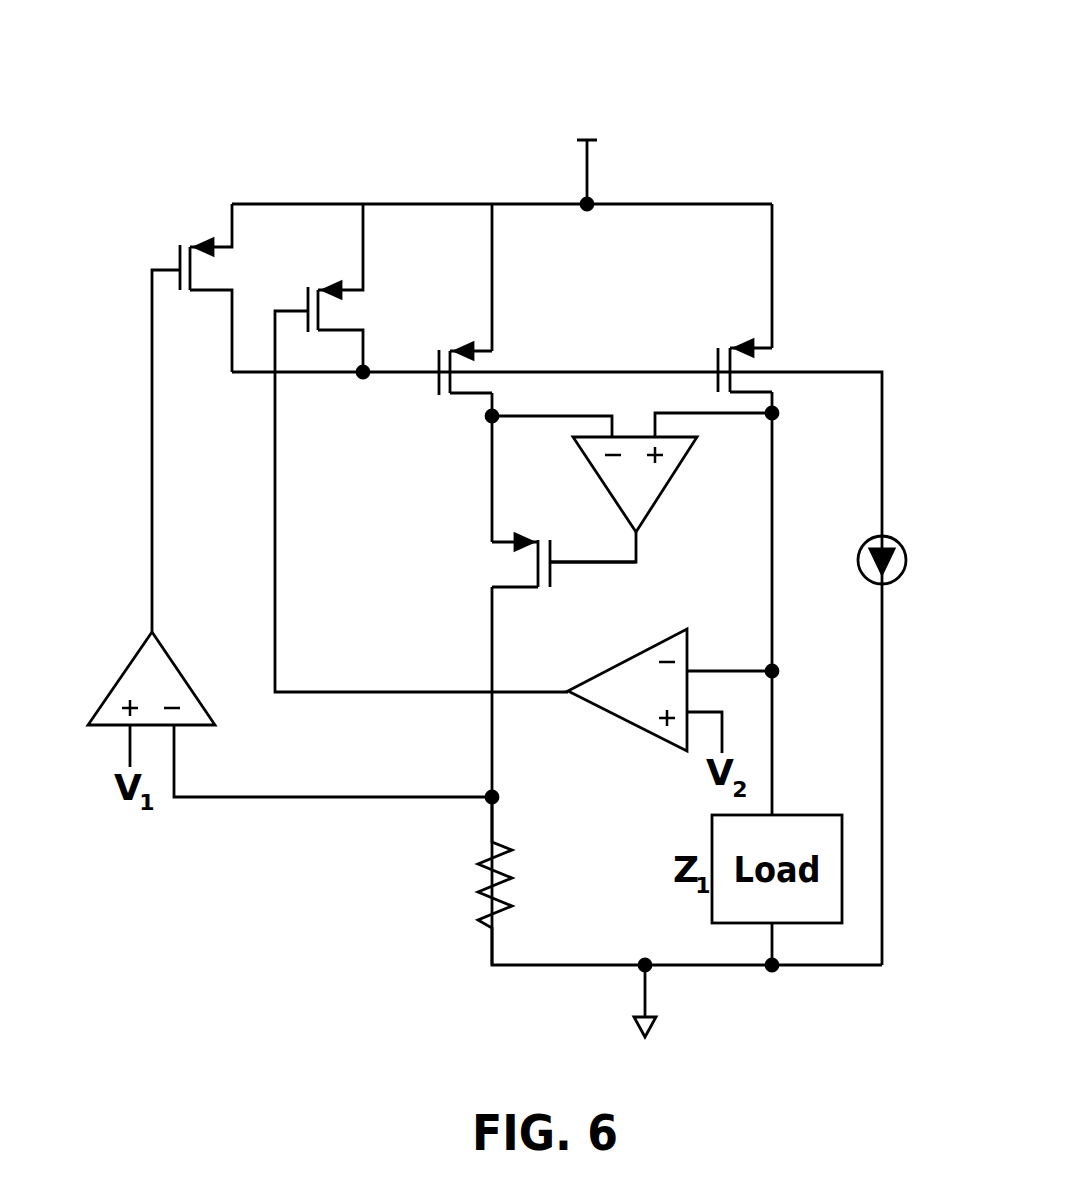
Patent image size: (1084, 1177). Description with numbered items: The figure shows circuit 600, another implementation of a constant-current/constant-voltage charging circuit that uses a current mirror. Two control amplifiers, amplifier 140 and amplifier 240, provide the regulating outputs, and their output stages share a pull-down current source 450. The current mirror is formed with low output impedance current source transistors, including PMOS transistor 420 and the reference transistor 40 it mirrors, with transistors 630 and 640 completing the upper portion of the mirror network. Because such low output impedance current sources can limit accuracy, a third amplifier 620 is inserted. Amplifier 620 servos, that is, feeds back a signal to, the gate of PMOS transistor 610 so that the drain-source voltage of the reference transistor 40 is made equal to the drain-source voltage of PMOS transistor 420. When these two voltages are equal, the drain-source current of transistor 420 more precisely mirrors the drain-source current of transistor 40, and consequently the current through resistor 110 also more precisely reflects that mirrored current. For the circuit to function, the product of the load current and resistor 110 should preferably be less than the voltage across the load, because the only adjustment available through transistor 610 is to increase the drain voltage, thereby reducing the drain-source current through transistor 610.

The constant-current/constant-voltage charging circuit 600 is at (481, 84).
The transistor 640 is at (176, 254).
The transistor 630 is at (303, 297).
The transistor 40 is at (435, 362).
The PMOS transistor 420 is at (715, 352).
The third amplifier 620 is at (685, 458).
The pull-down current source 450 is at (858, 552).
The PMOS transistor 610 is at (507, 563).
The amplifier 240 is at (610, 670).
The amplifier 140 is at (115, 683).
The resistor 110 is at (518, 887).